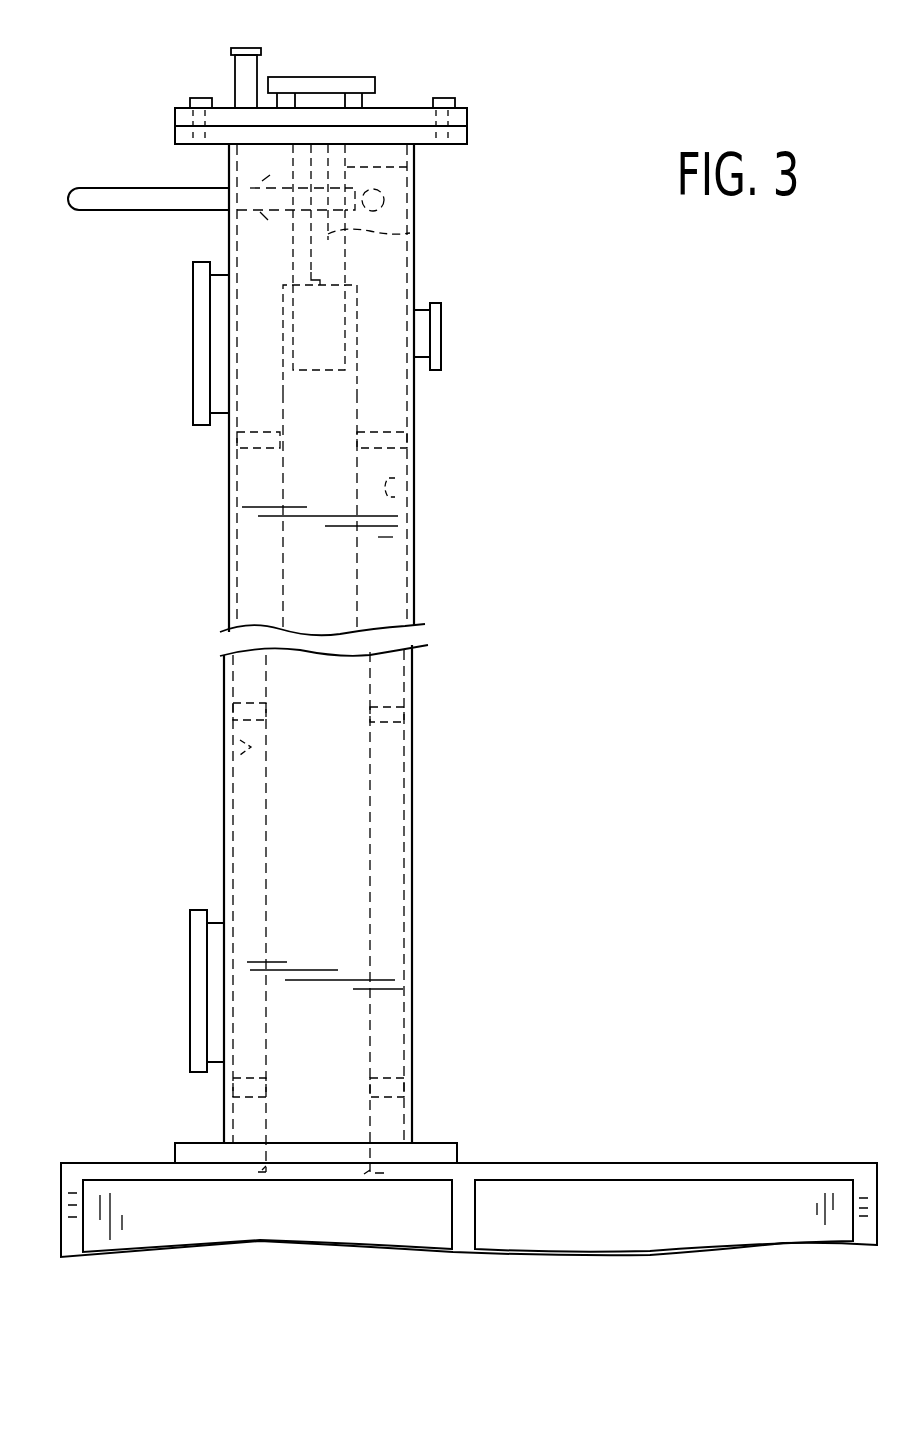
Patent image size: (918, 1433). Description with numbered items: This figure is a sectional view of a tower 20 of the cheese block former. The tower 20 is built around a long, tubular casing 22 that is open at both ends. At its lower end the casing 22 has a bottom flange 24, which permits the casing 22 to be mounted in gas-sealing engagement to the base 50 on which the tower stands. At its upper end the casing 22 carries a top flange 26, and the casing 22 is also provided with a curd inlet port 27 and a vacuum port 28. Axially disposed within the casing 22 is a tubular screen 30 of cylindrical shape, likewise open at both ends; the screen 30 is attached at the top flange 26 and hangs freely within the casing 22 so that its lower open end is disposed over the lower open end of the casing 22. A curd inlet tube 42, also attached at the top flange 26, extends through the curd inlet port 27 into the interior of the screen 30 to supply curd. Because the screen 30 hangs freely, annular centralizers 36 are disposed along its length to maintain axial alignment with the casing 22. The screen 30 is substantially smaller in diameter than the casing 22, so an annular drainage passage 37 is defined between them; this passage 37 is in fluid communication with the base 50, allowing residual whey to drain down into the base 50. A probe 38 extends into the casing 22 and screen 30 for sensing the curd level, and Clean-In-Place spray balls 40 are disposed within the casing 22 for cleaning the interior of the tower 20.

The tower 20 is at (427, 542).
The tubular casing 22 is at (228, 552).
The bottom flange 24 is at (440, 1140).
The top flange 26 is at (467, 138).
The curd inlet port 27 is at (353, 78).
The vacuum port 28 is at (245, 48).
The tubular screen 30 is at (376, 597).
The annular centralizers 36 is at (417, 428).
The annular drainage passage 37 is at (397, 478).
The probe 38 is at (415, 233).
The C.I.P. spray balls 40 is at (112, 188).
The curd inlet tube 42 is at (417, 163).
The base 50 is at (766, 1149).